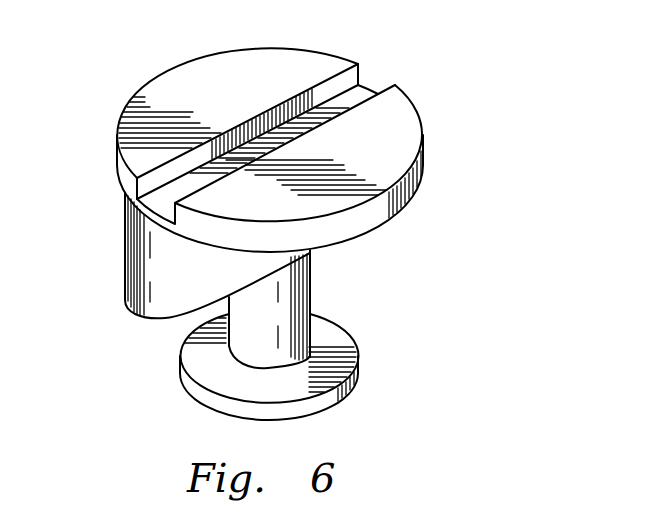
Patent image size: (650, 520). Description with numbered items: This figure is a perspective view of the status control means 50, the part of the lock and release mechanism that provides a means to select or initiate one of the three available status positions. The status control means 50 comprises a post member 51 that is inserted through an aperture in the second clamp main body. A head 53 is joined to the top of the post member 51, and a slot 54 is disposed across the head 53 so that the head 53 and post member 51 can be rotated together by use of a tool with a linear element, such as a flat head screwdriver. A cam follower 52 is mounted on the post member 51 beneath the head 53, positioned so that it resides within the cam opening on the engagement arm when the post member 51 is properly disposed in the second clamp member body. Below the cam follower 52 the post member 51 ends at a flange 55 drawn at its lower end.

The status control means 50 is at (313, 226).
The post member 51 is at (311, 283).
The cam follower 52 is at (143, 315).
The head 53 is at (142, 84).
The slot 54 is at (371, 87).
The base flange 55 is at (357, 353).